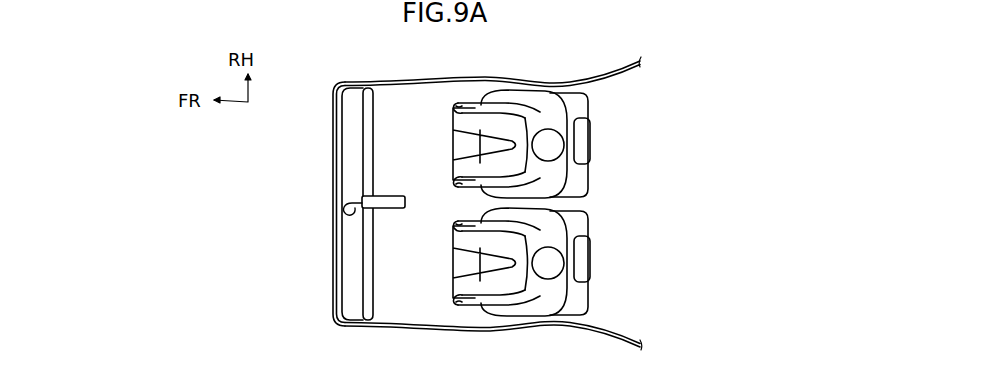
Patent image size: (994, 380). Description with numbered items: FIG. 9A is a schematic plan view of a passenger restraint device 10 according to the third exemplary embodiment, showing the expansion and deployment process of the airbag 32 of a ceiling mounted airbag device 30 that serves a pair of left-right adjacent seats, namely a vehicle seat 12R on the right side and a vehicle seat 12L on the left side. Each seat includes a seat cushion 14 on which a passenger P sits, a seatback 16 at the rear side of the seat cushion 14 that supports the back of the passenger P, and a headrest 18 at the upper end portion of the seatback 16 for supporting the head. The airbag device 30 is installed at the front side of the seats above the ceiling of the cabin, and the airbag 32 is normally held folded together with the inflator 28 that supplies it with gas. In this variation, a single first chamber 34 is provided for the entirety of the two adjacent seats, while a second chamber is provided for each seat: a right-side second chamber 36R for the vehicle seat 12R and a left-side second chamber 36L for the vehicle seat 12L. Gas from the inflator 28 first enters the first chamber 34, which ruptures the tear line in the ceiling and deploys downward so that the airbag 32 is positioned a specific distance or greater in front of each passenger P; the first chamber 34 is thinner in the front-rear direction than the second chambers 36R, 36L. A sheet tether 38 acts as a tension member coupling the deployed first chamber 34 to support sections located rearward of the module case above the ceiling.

The passenger restraint device 10 is at (388, 130).
The vehicle seat on the right side 12R is at (590, 102).
The vehicle seat on the left side 12L is at (590, 220).
The seat cushion 14 is at (480, 149).
The seatback 16 is at (580, 180).
The headrest 18 is at (590, 138).
The inflator 28 is at (391, 196).
The ceiling mounted airbag device 30 is at (397, 211).
The airbag 32 is at (346, 82).
The first chamber 34 is at (350, 267).
The right-side second chamber 36R is at (372, 112).
The left-side second chamber 36L is at (375, 298).
The sheet tether 38 is at (502, 77).
The passenger P is at (543, 90).